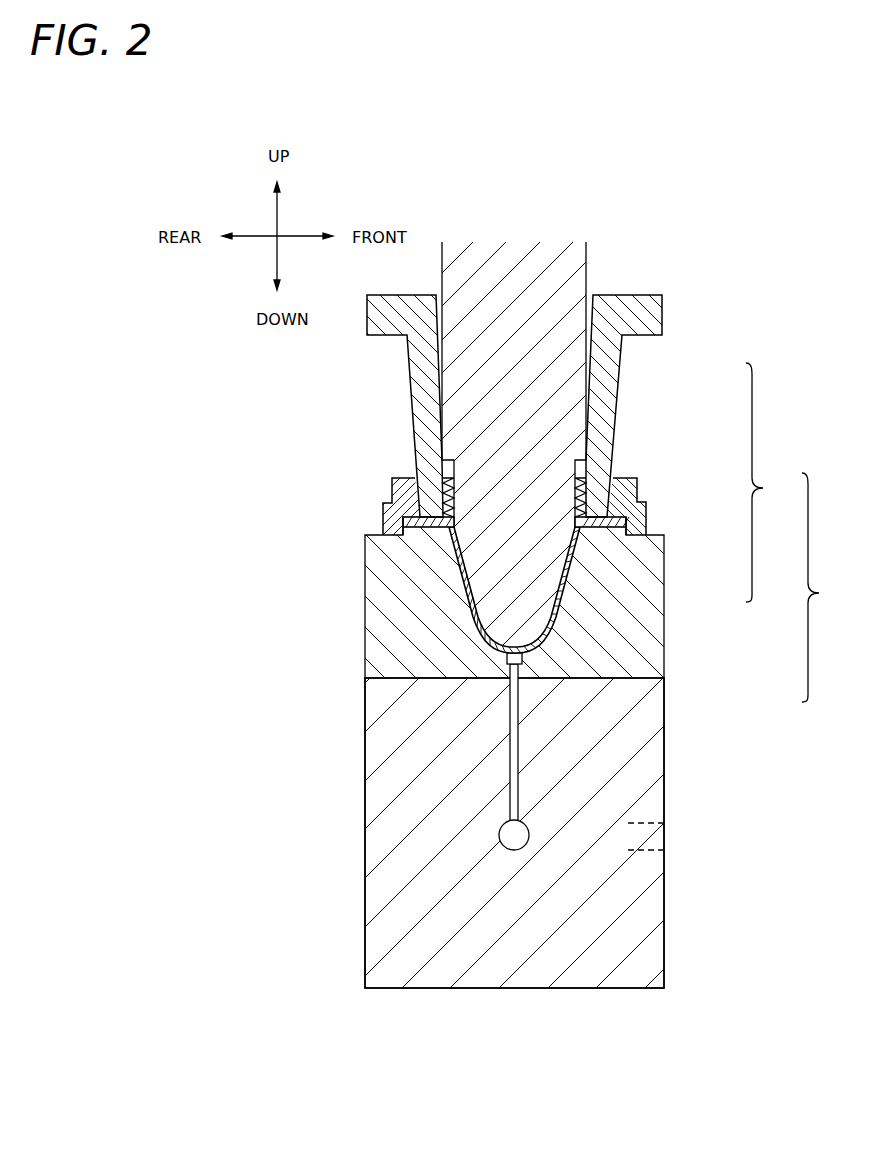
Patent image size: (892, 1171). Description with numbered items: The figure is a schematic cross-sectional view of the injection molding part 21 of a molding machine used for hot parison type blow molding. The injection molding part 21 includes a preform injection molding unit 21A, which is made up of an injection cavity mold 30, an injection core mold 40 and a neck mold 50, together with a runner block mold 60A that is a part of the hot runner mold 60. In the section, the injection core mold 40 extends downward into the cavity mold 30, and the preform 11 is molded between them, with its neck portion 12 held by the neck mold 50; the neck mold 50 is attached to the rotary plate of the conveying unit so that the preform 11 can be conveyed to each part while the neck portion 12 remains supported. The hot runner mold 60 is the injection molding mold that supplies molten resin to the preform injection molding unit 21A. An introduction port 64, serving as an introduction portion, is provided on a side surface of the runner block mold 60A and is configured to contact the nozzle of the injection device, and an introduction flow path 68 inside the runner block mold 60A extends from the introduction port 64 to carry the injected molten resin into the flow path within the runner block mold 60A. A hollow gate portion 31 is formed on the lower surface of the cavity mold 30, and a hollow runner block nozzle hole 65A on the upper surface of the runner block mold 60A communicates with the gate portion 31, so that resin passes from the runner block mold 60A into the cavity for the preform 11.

The preform 11 is at (458, 575).
The neck portion 12 is at (448, 476).
The injection molding part 21 is at (824, 587).
The preform injection molding unit 21A is at (772, 482).
The injection cavity mold 30 is at (664, 592).
The gate portion 31 is at (508, 668).
The injection core mold 40 is at (530, 425).
The neck mold 50 is at (643, 334).
The hot runner mold 60 is at (665, 713).
The runner block mold 60A is at (514, 833).
The introduction port 64 is at (665, 837).
The runner block nozzle hole 65A is at (513, 740).
The introduction flow path 68 is at (655, 822).